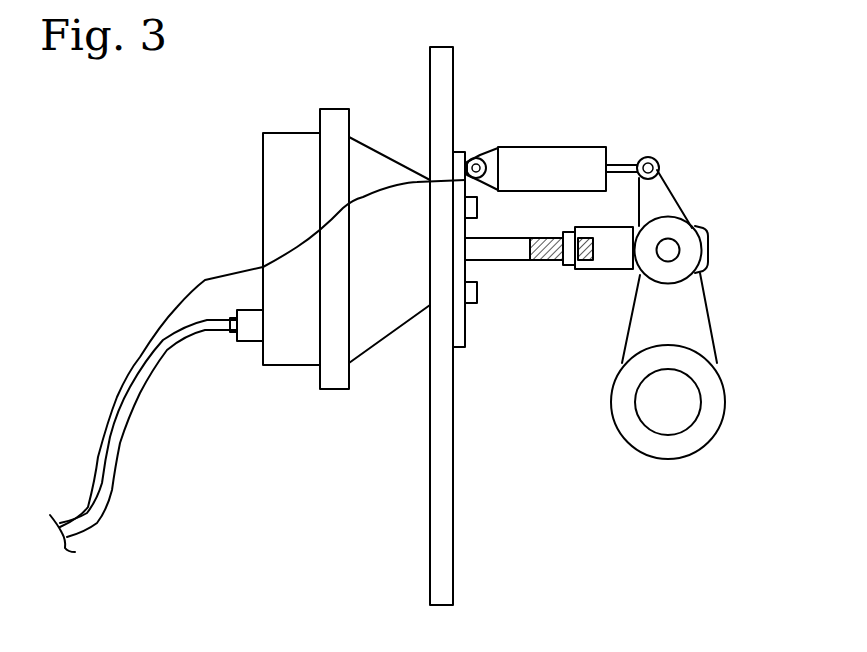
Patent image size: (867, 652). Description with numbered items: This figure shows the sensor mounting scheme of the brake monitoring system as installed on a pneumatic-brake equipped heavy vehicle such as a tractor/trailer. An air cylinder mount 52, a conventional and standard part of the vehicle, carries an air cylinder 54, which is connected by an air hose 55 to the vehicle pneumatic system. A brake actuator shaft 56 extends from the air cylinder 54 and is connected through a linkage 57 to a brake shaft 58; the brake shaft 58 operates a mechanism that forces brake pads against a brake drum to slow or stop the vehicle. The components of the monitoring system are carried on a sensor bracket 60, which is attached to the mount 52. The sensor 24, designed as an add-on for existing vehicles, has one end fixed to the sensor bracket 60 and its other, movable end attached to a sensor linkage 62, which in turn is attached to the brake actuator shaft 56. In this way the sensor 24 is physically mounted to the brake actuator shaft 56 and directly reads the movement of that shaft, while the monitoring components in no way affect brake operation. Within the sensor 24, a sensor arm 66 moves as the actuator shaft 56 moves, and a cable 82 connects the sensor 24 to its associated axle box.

The sensor 24 is at (543, 143).
The air cylinder mount 52 is at (440, 47).
The air cylinder 54 is at (333, 390).
The air hose 55 is at (127, 412).
The brake actuator shaft 56 is at (500, 262).
The linkage 57 is at (708, 312).
The brake shaft 58 is at (673, 402).
The sensor bracket 60 is at (458, 152).
The sensor linkage 62 is at (673, 185).
The sensor arm 66 is at (626, 163).
The cable 82 is at (230, 275).